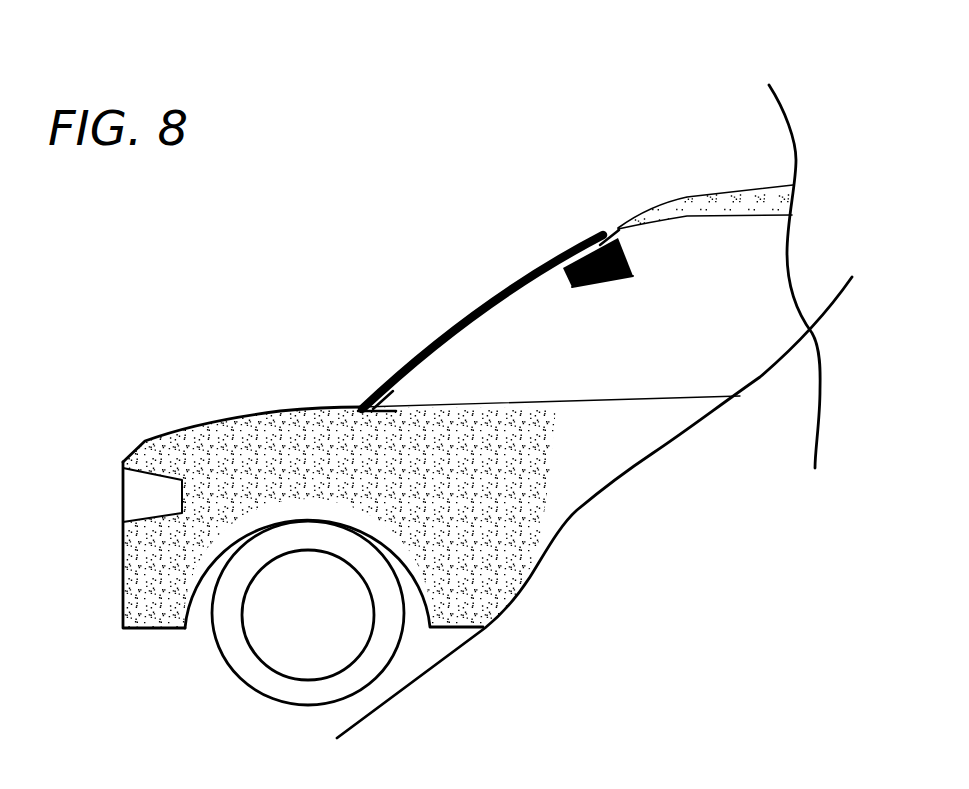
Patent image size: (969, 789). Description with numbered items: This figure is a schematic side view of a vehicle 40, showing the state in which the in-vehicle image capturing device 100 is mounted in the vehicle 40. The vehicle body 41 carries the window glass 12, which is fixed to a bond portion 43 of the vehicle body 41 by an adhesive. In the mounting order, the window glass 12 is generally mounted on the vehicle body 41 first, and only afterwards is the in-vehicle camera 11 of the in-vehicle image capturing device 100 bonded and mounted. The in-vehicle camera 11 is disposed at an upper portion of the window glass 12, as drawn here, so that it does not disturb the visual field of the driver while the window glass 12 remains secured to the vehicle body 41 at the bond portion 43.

The vehicle 40 is at (425, 110).
The vehicle body 41 is at (323, 453).
The window glass 12 is at (437, 337).
The bond portion 43 is at (377, 398).
The in-vehicle image capturing device 100 is at (630, 260).
The in-vehicle camera 11 is at (607, 280).